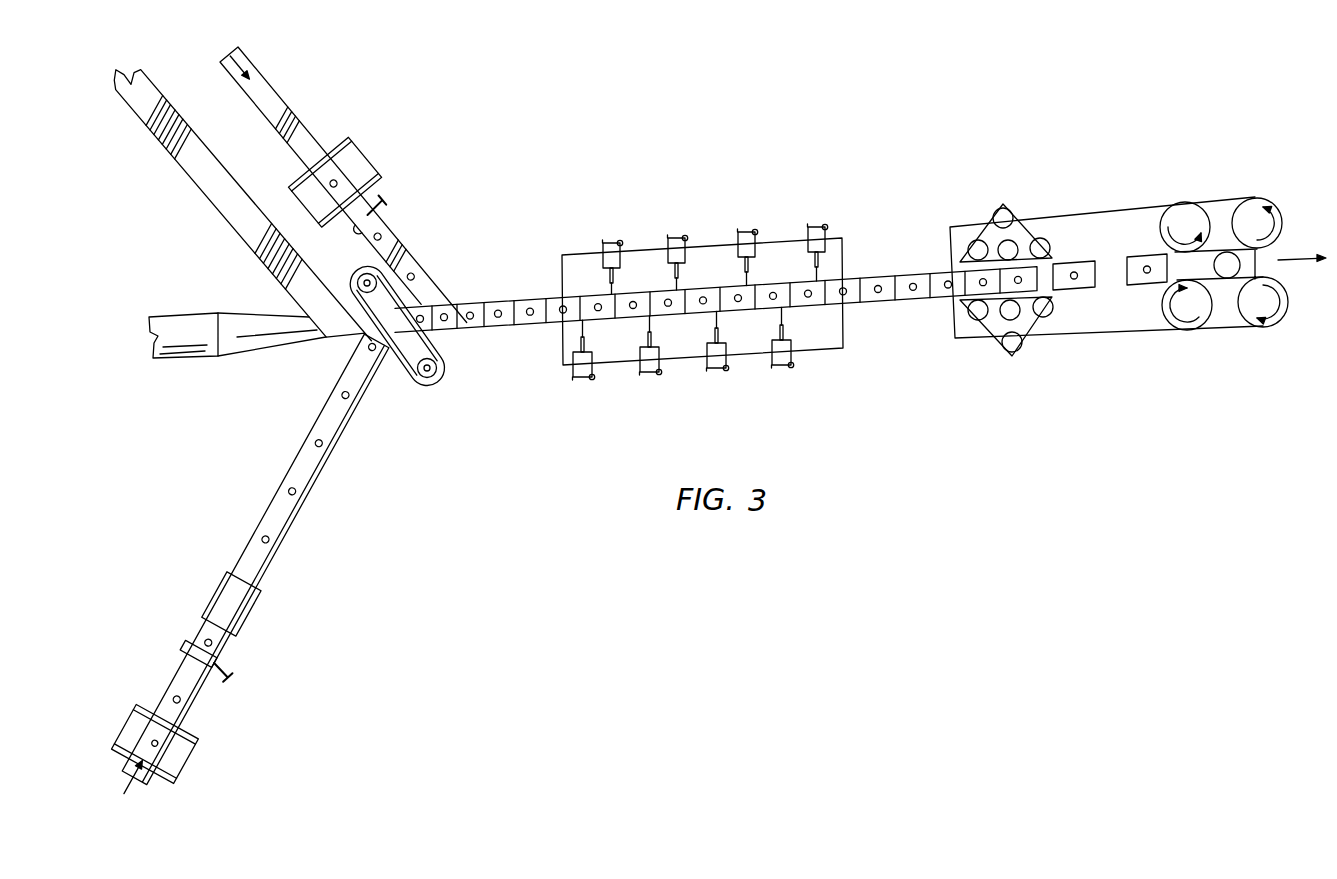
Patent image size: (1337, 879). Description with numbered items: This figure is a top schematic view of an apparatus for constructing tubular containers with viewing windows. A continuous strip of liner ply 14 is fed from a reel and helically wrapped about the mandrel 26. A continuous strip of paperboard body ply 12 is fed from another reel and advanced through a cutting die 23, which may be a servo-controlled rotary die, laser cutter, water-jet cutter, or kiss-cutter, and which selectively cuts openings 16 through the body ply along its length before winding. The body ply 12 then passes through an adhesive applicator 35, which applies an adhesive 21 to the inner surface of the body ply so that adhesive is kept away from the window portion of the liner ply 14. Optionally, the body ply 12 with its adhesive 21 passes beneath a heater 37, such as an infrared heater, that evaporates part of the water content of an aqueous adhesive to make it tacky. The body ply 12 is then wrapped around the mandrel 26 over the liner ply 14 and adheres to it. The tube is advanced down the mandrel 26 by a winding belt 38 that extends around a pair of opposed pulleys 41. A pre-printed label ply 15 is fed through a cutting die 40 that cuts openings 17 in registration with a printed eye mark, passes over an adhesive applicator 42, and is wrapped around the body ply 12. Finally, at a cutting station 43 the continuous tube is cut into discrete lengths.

The body ply 12 is at (153, 769).
The liner ply 14 is at (142, 83).
The label ply 15 is at (233, 80).
The openings 16 is at (344, 391).
The openings 17 is at (382, 236).
The adhesive 21 is at (224, 640).
The cutting die 23 is at (194, 730).
The mandrel 26 is at (256, 346).
The adhesive applicator 35 is at (190, 649).
The heater 37 is at (218, 593).
The winding belt 38 is at (398, 302).
The cutting die 40 is at (366, 157).
The pulleys 41 is at (384, 269).
The adhesive applicator 42 is at (392, 212).
The cutting station 43 is at (850, 330).